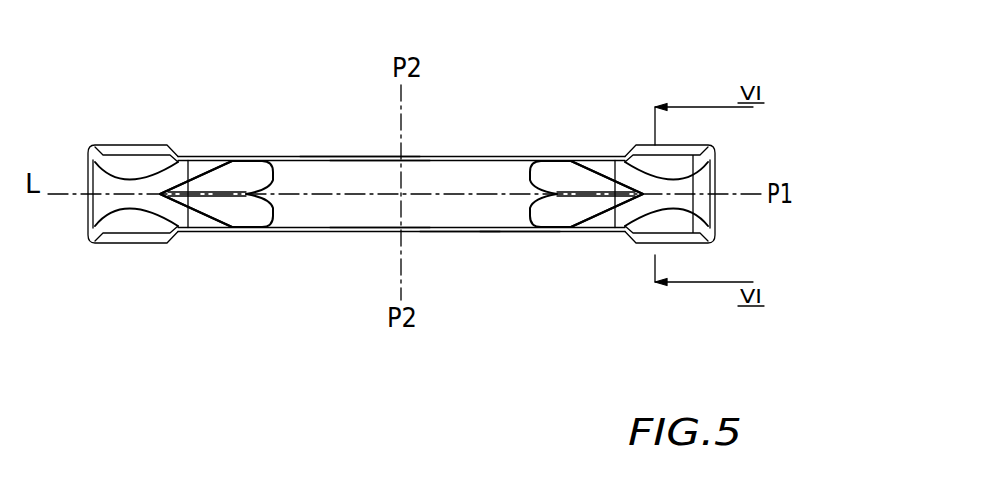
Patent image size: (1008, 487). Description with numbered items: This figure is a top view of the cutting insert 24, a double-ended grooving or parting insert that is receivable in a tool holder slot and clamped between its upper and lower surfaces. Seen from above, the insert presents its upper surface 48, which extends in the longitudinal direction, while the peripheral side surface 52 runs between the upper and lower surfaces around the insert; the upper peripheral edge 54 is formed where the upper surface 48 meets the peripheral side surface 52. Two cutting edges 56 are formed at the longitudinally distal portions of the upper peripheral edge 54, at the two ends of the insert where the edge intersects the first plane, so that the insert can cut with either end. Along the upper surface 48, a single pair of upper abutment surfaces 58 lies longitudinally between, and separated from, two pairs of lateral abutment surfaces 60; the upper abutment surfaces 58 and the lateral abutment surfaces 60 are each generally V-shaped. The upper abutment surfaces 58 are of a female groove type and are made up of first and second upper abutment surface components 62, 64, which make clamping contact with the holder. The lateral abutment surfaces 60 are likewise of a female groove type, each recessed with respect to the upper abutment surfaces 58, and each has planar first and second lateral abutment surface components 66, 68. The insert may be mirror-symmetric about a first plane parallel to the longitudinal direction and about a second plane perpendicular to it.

The cutting insert 24 is at (295, 266).
The upper surface 48 is at (469, 152).
The peripheral side surface 52 is at (521, 249).
The upper peripheral edge 54 is at (455, 232).
The cutting edge 56 is at (73, 148).
The upper abutment surface 58 is at (359, 163).
The lateral abutment surface 60 is at (251, 150).
The first upper abutment surface component 62 is at (382, 173).
The second upper abutment surface component 64 is at (367, 208).
The first lateral abutment surface component 66 is at (585, 180).
The second lateral abutment surface component 68 is at (231, 158).